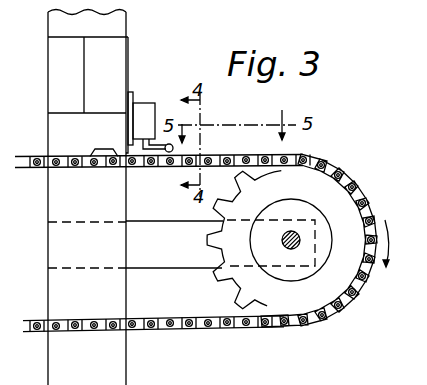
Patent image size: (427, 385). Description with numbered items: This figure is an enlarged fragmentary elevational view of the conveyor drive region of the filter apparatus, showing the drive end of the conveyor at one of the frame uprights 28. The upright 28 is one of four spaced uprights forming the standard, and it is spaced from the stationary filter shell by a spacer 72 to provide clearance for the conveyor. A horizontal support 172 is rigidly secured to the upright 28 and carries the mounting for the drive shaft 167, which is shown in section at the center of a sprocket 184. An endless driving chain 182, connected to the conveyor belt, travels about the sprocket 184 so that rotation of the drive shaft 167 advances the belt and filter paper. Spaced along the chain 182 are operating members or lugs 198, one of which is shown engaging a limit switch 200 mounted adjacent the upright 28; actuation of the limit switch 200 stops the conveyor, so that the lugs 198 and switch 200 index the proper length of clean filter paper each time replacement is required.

The spacer 72 is at (119, 52).
The limit switch 200 is at (153, 103).
The operating member or lug 198 is at (108, 149).
The sprocket 184 is at (357, 181).
The horizontal support 172 is at (186, 262).
The drive shaft 167 is at (299, 249).
The endless driving chain 182 is at (247, 324).
The upright 28 is at (123, 366).